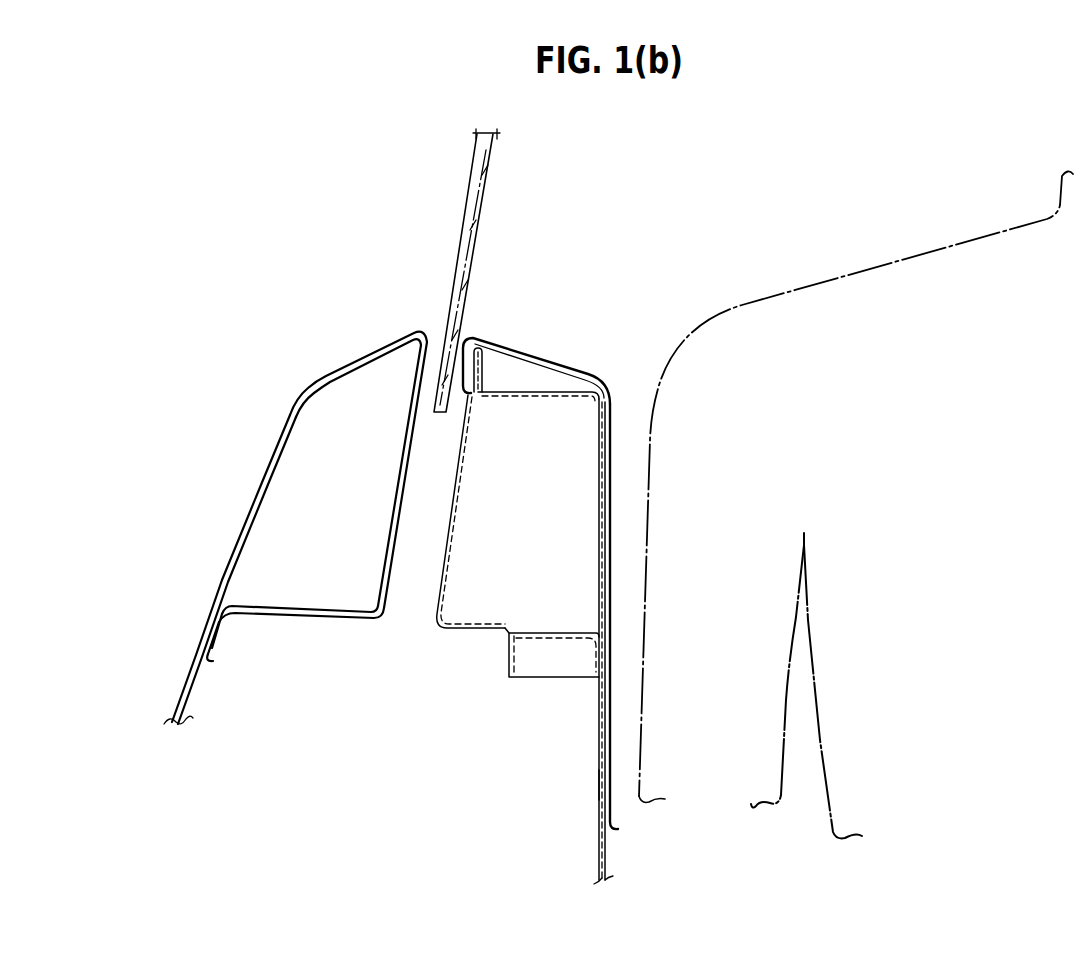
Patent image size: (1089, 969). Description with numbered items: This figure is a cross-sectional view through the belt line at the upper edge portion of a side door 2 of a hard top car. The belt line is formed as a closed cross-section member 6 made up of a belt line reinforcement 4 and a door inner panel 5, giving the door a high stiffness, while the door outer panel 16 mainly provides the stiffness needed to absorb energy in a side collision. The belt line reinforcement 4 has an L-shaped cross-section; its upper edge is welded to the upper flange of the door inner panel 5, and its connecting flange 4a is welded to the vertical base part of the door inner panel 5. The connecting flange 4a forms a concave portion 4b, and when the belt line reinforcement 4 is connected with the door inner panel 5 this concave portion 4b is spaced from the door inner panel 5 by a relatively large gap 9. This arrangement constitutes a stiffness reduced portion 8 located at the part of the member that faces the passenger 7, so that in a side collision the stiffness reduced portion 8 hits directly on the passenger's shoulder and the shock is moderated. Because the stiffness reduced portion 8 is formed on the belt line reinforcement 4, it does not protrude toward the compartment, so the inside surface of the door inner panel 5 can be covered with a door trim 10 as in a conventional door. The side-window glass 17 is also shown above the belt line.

The side door 2 is at (318, 314).
The belt line reinforcement 4 is at (440, 552).
The connecting flange 4a is at (612, 657).
The concave portion 4b is at (514, 654).
The door inner panel 5 is at (600, 786).
The closed cross-section member 6 is at (532, 521).
The passenger 7 is at (897, 228).
The stiffness reduced portion 8 is at (620, 621).
The gap 9 is at (575, 659).
The door trim 10 is at (580, 374).
The door outer panel 16 is at (232, 554).
The side-window glass 17 is at (481, 216).